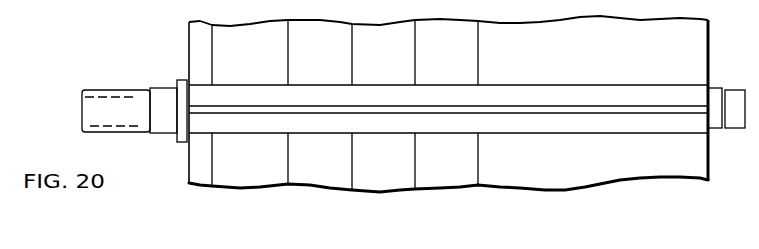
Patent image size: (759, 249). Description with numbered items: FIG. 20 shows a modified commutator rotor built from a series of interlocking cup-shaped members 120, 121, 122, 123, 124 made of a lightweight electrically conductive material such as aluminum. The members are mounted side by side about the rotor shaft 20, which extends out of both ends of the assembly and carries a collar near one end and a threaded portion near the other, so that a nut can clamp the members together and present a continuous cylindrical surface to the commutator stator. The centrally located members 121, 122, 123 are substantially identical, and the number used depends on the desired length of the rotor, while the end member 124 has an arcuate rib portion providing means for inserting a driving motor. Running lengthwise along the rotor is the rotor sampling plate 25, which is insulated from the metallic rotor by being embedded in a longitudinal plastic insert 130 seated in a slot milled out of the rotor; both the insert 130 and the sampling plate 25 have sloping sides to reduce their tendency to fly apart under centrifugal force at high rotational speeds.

The rotor shaft 20 is at (136, 94).
The rotor sampling plate 25 is at (610, 108).
The cup-shaped member 120 is at (263, 65).
The cup-shaped member 121 is at (336, 65).
The cup-shaped member 122 is at (400, 65).
The cup-shaped member 123 is at (463, 65).
The end member 124 is at (546, 65).
The longitudinal plastic insert 130 is at (667, 98).